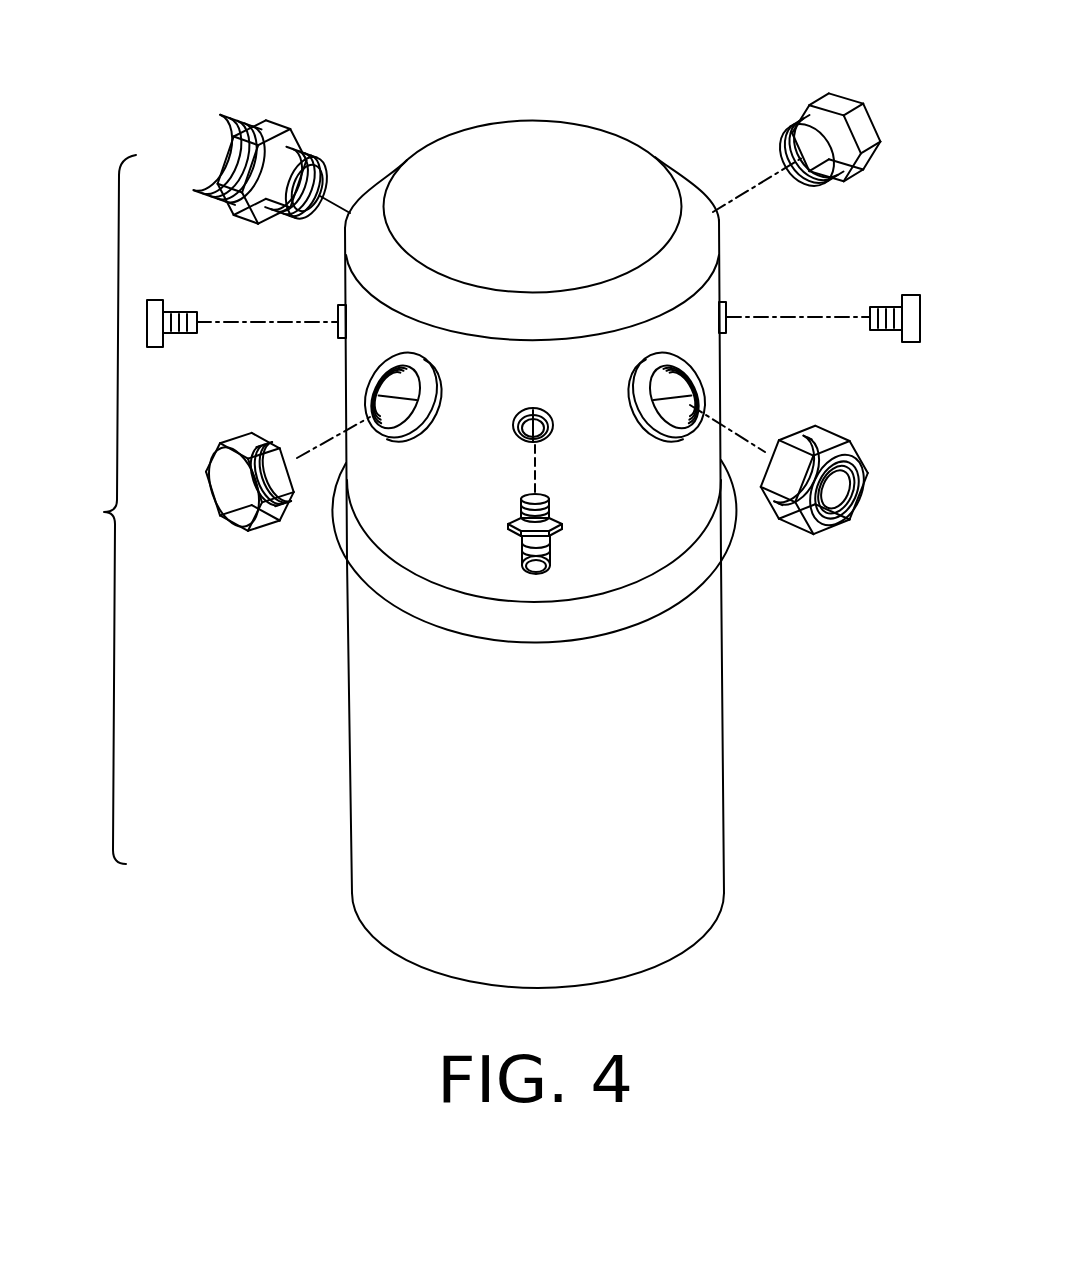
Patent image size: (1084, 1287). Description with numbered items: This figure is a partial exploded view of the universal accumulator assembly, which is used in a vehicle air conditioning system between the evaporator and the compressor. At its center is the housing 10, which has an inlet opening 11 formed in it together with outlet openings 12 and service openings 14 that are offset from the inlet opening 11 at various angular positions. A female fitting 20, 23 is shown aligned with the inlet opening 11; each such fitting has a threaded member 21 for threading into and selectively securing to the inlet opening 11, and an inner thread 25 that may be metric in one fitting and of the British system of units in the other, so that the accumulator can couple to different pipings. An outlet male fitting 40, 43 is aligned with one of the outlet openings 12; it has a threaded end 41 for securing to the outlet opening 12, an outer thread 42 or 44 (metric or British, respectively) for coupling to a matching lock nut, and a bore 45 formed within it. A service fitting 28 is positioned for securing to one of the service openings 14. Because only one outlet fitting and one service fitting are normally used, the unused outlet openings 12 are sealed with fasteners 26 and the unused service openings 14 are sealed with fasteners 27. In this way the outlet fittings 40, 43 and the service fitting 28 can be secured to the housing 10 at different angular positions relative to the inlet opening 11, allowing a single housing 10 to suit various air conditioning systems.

The housing 10 is at (678, 715).
The inlet opening 11 is at (705, 378).
The outlet opening 12 is at (372, 392).
The service opening 14 is at (548, 435).
The female fitting 20 is at (823, 467).
The threaded member 21 is at (797, 430).
The female fitting 23 is at (823, 467).
The inner thread 25 is at (837, 497).
The fastener 26 is at (792, 145).
The fastener 27 is at (177, 303).
The service fitting 28 is at (505, 552).
The male fitting 40 is at (299, 154).
The threaded end 41 is at (313, 153).
The outer thread 42 is at (216, 132).
The male fitting 43 is at (299, 154).
The outer thread 44 is at (223, 120).
The bore 45 is at (311, 200).